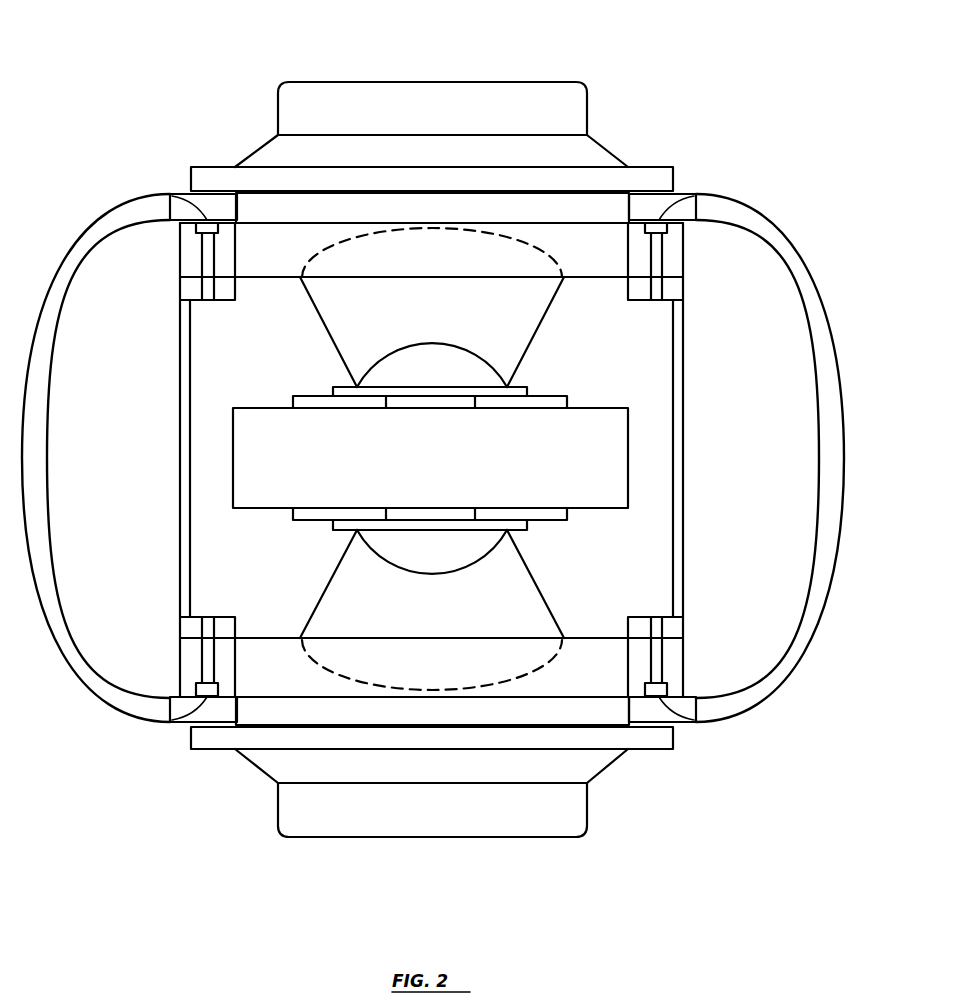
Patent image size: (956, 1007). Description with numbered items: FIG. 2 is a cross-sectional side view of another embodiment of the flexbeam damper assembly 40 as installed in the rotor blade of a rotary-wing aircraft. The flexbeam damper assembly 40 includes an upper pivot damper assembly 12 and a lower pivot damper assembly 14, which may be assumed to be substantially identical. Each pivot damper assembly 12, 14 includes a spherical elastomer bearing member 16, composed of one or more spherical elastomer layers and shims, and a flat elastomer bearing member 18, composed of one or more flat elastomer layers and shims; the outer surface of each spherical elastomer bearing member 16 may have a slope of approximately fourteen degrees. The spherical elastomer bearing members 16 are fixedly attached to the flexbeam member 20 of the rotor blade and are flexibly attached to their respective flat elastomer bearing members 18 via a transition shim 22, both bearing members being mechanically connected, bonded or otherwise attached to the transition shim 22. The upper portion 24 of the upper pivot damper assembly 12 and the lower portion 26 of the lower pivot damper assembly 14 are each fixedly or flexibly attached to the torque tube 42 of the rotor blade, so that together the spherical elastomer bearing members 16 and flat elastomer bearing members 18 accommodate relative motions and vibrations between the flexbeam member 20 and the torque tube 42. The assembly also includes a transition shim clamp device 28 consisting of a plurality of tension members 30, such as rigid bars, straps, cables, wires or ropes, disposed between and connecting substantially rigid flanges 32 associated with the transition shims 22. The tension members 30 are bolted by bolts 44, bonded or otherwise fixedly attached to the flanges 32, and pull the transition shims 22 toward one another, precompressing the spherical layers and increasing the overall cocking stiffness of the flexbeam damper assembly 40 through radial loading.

The upper pivot damper assembly 12 is at (628, 125).
The lower pivot damper assembly 14 is at (612, 806).
The spherical elastomer bearing member 16 is at (537, 345).
The flat elastomer bearing member 18 is at (672, 191).
The flexbeam member 20 is at (628, 455).
The transition shim 22 is at (686, 267).
The upper portion 24 is at (520, 45).
The lower portion 26 is at (546, 870).
The transition shim clamp device 28 is at (705, 414).
The tension members 30 is at (178, 350).
The substantially rigid flanges 32 is at (167, 217).
The flexbeam damper assembly 40 is at (704, 37).
The torque tube 42 is at (727, 706).
The bolts 44 is at (168, 197).